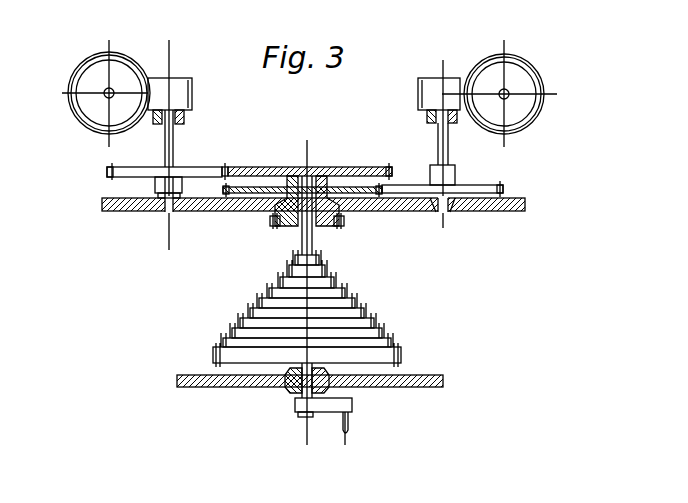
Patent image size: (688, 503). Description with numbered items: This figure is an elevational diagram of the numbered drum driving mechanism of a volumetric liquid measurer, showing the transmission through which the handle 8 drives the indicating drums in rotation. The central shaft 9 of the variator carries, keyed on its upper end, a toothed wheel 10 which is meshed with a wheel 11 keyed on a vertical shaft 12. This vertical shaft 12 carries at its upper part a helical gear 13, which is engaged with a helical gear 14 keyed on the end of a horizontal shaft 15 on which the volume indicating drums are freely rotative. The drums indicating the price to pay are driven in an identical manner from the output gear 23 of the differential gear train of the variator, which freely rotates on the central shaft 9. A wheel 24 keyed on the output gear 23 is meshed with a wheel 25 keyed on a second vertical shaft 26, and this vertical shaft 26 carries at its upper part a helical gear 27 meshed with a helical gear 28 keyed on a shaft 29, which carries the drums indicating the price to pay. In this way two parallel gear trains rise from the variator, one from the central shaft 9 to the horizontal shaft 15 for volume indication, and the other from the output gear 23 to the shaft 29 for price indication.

The handle 8 is at (349, 428).
The central shaft 9 is at (303, 250).
The toothed wheel 10 is at (322, 168).
The wheel 11 is at (205, 170).
The vertical shaft 12 is at (167, 150).
The helical gear 13 is at (192, 98).
The helical gear 14 is at (93, 129).
The horizontal shaft 15 is at (105, 97).
The output gear 23 is at (334, 220).
The wheel 24 is at (381, 195).
The wheel 25 is at (496, 186).
The vertical shaft 26 is at (441, 146).
The helical gear 27 is at (426, 90).
The helical gear 28 is at (531, 82).
The shaft 29 is at (509, 98).